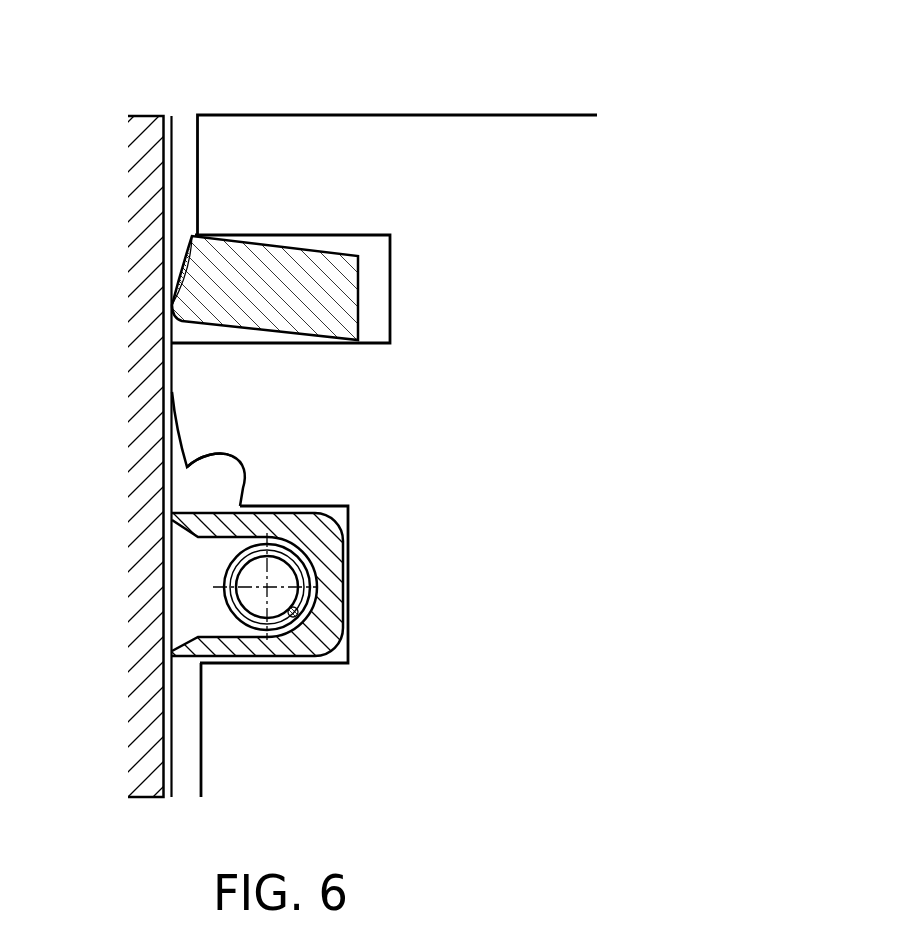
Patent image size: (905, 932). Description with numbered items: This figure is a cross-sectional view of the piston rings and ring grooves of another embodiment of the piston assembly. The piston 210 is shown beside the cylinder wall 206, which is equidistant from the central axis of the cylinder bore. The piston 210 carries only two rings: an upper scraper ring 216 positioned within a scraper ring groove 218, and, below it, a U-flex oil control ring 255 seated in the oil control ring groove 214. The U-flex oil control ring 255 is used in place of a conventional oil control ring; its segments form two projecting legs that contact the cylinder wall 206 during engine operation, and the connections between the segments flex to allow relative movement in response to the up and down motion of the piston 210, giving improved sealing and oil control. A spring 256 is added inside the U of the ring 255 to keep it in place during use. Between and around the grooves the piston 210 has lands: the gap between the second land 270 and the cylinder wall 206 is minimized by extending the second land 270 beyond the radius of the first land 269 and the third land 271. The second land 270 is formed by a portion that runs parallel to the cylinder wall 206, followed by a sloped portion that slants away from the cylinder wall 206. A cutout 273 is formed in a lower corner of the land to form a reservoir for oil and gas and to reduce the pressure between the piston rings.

The cylinder wall 206 is at (142, 137).
The piston 210 is at (384, 114).
The oil control ring groove 214 is at (340, 518).
The scraper ring 216 is at (277, 292).
The scraper ring groove 218 is at (383, 278).
The U-flex oil control ring 255 is at (320, 607).
The spring 256 is at (293, 565).
The first land 269 is at (197, 178).
The second land 270 is at (185, 392).
The third land 271 is at (207, 726).
The cutout 273 is at (222, 485).